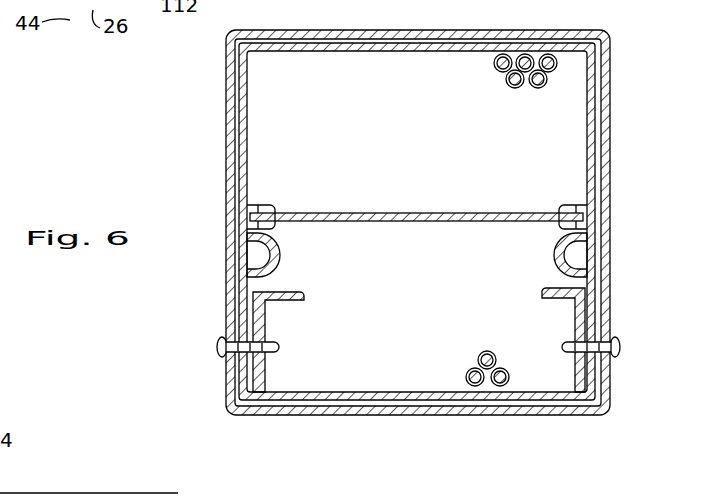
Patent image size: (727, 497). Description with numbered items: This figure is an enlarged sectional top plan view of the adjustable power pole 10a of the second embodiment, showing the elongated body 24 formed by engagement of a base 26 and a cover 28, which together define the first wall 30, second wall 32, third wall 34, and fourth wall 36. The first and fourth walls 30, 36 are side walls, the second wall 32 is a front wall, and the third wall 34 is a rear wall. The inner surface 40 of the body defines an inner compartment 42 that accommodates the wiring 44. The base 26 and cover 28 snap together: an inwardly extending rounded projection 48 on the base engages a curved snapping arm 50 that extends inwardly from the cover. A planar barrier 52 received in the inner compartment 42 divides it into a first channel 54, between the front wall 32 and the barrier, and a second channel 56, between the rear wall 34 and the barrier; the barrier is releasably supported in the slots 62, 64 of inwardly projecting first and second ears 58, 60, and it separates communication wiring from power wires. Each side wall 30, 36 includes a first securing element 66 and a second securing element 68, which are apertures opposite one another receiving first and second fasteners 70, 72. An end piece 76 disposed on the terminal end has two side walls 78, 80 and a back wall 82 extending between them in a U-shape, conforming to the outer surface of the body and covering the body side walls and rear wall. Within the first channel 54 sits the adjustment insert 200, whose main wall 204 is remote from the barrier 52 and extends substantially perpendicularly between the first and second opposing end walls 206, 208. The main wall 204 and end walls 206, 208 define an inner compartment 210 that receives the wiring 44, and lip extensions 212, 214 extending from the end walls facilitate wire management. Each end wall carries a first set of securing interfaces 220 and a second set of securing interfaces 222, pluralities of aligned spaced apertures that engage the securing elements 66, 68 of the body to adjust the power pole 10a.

The power pole 10a is at (172, 117).
The elongated body 24 is at (304, 418).
The base 26 is at (494, 418).
The cover 28 is at (312, 60).
The first wall 30 is at (583, 130).
The second wall 32 is at (412, 410).
The third wall 34 is at (392, 52).
The fourth wall 36 is at (248, 118).
The inner surface 40 is at (583, 93).
The inner compartment 42 is at (268, 160).
The wiring 44 is at (497, 70).
The projection 48 is at (250, 258).
The snapping arm 50 is at (270, 252).
The barrier 52 is at (385, 212).
The first channel 54 is at (243, 88).
The second channel 56 is at (254, 305).
The first ear 58 is at (562, 205).
The second ear 60 is at (276, 214).
The slot 62 is at (560, 216).
The slot 64 is at (265, 205).
The first securing element 66 is at (566, 407).
The second securing element 68 is at (224, 358).
The first fastener 70 is at (558, 354).
The second fastener 72 is at (218, 347).
The end piece 76 is at (232, 182).
The side wall 78 is at (610, 412).
The side wall 80 is at (232, 400).
The back wall 82 is at (175, 492).
The adjustment insert 200 is at (419, 336).
The main wall 204 is at (372, 403).
The first end wall 206 is at (562, 306).
The second end wall 208 is at (298, 300).
The inner compartment 210 is at (403, 387).
The lip extension 212 is at (547, 294).
The lip extension 214 is at (285, 295).
The first set of securing interfaces 220 is at (563, 347).
The second set of securing interfaces 222 is at (273, 346).